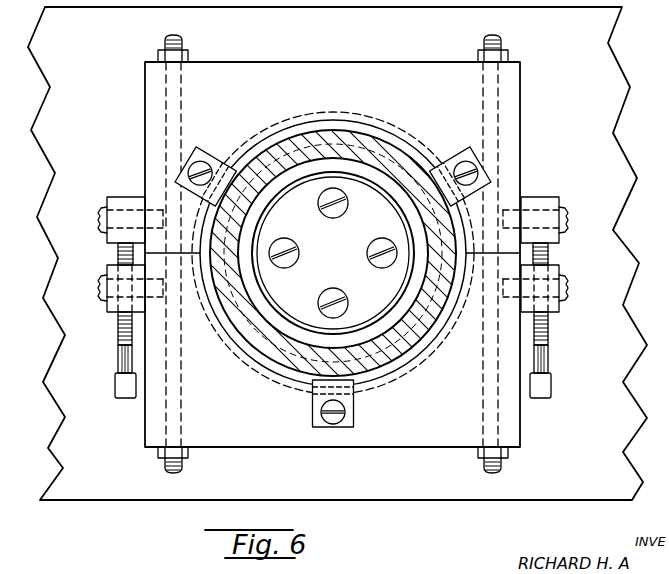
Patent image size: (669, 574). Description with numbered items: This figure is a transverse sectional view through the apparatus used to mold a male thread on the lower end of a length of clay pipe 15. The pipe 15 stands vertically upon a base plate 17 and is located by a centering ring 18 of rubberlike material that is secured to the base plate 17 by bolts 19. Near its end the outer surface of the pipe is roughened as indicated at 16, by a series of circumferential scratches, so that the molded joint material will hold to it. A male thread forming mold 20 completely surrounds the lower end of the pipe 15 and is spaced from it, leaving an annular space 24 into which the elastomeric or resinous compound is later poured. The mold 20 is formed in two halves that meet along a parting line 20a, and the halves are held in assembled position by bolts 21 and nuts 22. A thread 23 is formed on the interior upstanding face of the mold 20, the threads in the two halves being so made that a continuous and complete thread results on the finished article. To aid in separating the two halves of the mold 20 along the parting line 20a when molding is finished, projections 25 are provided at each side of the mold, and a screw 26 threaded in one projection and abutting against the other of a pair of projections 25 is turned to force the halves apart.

The clay pipe 15 is at (395, 150).
The roughened outer surface 16 is at (420, 353).
The base plate 17 is at (625, 150).
The centering ring 18 is at (333, 253).
The bolts 19 is at (369, 258).
The male thread forming mold 20 is at (266, 62).
The parting line 20a is at (494, 254).
The bolts 21 is at (182, 43).
The nuts 22 is at (158, 56).
The thread 23 is at (329, 116).
The annular space 24 is at (262, 145).
The projections 25 is at (118, 197).
The screw 26 is at (118, 338).